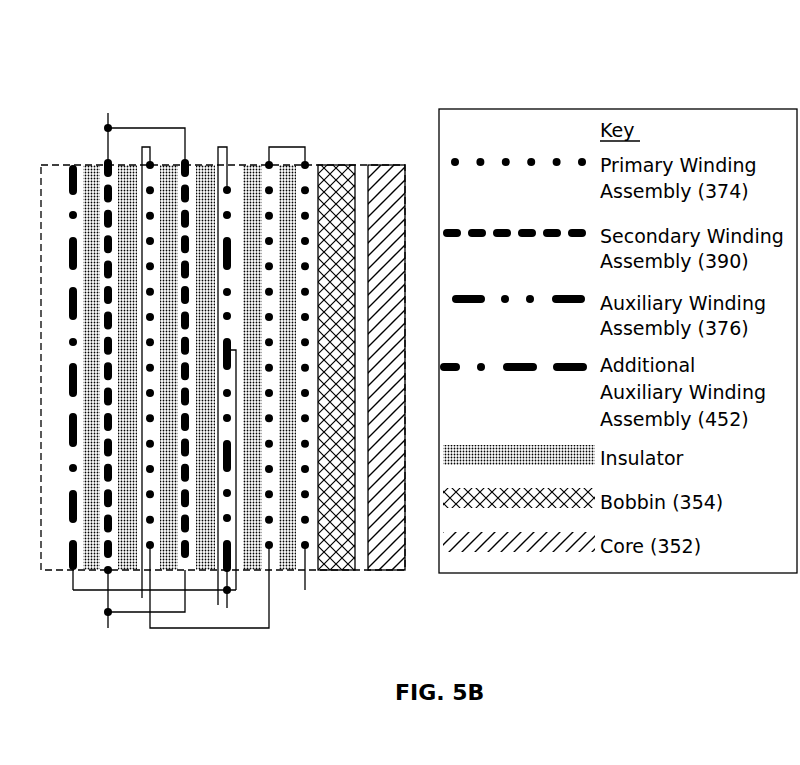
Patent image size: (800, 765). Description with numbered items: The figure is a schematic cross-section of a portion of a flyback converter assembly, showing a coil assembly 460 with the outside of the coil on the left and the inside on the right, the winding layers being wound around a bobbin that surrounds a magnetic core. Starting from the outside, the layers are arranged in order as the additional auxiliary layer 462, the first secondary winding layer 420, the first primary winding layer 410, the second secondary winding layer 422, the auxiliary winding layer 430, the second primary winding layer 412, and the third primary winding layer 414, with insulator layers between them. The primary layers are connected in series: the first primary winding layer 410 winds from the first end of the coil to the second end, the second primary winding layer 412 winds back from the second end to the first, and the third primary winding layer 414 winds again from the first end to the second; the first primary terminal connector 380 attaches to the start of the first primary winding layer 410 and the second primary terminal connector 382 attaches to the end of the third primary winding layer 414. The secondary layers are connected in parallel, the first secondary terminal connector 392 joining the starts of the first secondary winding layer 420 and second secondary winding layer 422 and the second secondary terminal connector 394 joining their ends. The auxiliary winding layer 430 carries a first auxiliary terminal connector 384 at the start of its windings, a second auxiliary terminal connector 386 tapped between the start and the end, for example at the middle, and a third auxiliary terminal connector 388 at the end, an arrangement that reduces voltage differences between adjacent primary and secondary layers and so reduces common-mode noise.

The coil assembly 460 is at (423, 76).
The additional auxiliary layer 462 is at (73, 160).
The first secondary terminal connector 392 is at (100, 104).
The second secondary terminal connector 394 is at (97, 631).
The first secondary winding layer 420 is at (115, 157).
The first primary winding layer 410 is at (158, 157).
The first primary terminal connector 380 is at (137, 600).
The second secondary winding layer 422 is at (193, 157).
The auxiliary winding layer 430 is at (241, 156).
The first auxiliary terminal connector 384 is at (217, 607).
The second auxiliary terminal connector 386 is at (242, 600).
The third auxiliary terminal connector 388 is at (225, 622).
The second primary winding layer 412 is at (283, 156).
The third primary winding layer 414 is at (314, 156).
The second primary terminal connector 382 is at (307, 592).